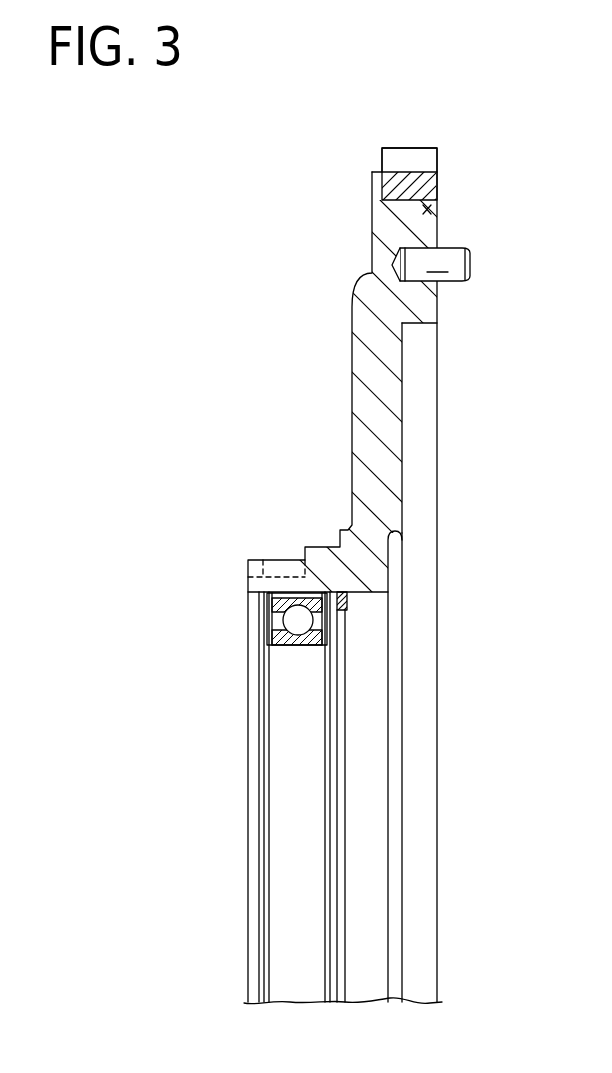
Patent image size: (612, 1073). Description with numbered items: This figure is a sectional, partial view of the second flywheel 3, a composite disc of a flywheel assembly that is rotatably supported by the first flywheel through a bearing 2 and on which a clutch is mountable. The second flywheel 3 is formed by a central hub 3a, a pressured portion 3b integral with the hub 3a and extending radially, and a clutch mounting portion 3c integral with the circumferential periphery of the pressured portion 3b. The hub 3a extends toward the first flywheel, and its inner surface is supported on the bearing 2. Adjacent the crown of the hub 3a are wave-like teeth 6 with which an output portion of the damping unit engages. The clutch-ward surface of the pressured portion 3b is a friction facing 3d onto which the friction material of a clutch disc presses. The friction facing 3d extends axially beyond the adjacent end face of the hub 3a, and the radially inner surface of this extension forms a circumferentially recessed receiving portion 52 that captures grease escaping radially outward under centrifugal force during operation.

The bearing 2 is at (296, 647).
The second flywheel 3 is at (306, 502).
The central hub 3a is at (311, 553).
The pressured portion 3b is at (395, 380).
The clutch mounting portion 3c is at (431, 208).
The friction facing 3d is at (403, 432).
The wave-like teeth 6 is at (256, 551).
The receiving portion 52 is at (401, 540).